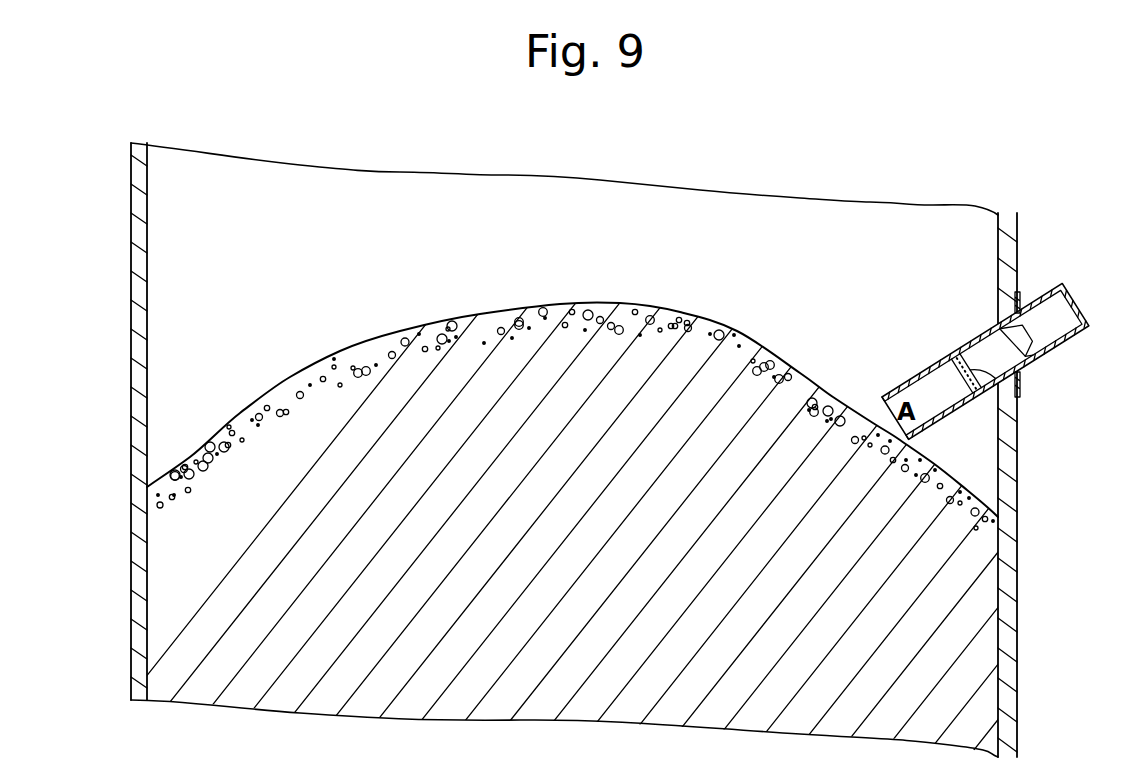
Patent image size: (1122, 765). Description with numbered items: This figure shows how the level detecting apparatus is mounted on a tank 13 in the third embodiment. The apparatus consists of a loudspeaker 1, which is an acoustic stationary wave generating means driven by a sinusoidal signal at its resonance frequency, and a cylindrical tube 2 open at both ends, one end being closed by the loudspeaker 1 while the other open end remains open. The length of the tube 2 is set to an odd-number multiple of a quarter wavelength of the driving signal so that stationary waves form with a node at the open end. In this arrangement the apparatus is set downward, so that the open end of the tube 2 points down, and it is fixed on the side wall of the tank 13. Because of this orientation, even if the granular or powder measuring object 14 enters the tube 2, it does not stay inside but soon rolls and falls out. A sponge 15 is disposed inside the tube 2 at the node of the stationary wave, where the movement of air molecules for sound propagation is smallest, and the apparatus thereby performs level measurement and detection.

The loudspeaker 1 is at (1033, 360).
The tube 2 is at (934, 366).
The tank 13 is at (131, 306).
The measuring object 14 is at (597, 522).
The sponge 15 is at (1004, 380).